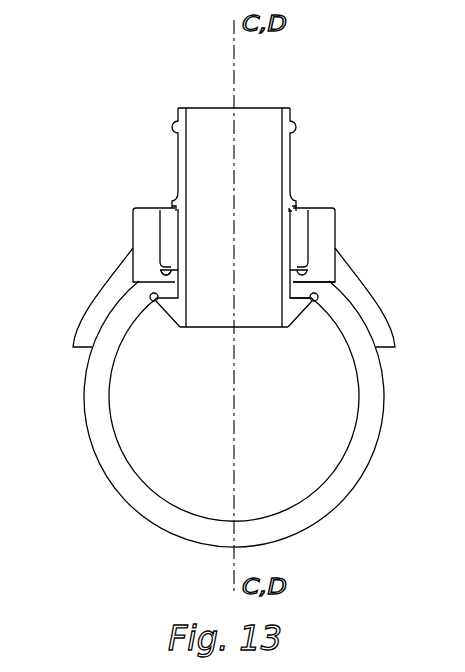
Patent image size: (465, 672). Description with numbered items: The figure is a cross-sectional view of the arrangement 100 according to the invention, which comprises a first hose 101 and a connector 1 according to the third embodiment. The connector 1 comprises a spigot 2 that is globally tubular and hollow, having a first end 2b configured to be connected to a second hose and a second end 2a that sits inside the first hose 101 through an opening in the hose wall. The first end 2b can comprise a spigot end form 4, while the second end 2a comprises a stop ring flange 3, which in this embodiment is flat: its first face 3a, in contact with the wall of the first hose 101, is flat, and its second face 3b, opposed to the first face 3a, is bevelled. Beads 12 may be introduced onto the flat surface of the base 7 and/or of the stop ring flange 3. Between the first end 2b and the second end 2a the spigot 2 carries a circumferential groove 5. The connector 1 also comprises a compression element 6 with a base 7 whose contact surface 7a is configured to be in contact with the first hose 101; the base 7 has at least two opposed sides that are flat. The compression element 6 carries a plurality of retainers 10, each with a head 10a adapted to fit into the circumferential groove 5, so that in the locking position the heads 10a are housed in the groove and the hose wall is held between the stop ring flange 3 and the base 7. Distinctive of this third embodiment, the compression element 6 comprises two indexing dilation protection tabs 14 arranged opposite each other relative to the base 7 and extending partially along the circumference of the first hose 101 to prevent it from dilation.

The connector 1 is at (98, 259).
The spigot 2 is at (221, 208).
The second end 2a is at (182, 380).
The first end 2b is at (160, 110).
The stop ring flange 3 is at (295, 319).
The first face 3a is at (295, 293).
The second face 3b is at (312, 300).
The spigot end form 4 is at (296, 127).
The circumferential groove 5 is at (133, 210).
The compression element 6 is at (348, 209).
The base 7 is at (318, 262).
The contact surface 7a is at (157, 275).
The retainer 10 is at (311, 232).
The head 10a is at (297, 208).
The bead 12 is at (163, 274).
The indexing dilation protection tab 14 is at (118, 278).
The arrangement 100 is at (197, 433).
The first hose 101 is at (110, 452).